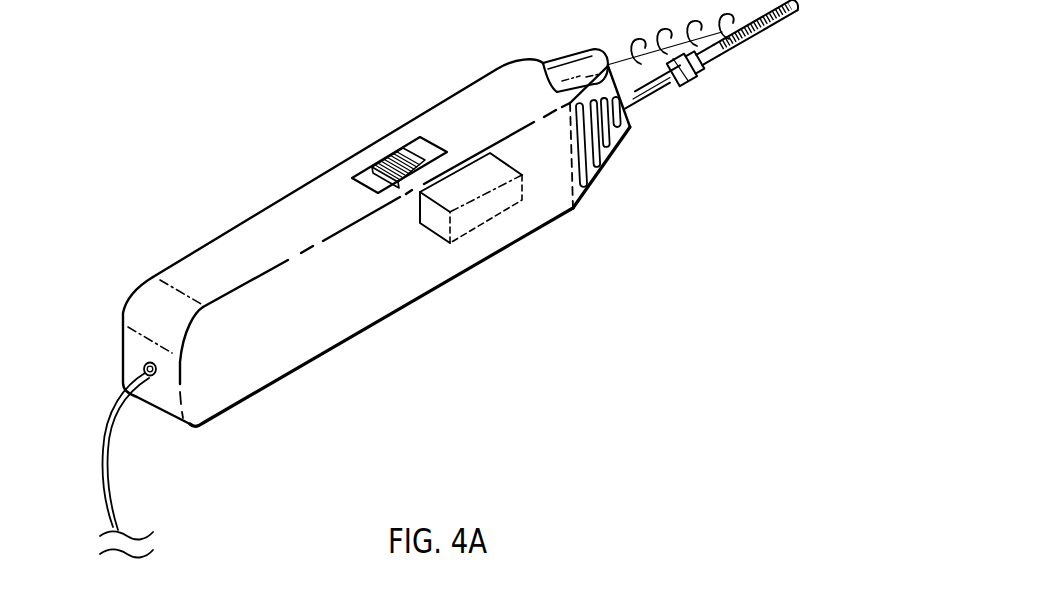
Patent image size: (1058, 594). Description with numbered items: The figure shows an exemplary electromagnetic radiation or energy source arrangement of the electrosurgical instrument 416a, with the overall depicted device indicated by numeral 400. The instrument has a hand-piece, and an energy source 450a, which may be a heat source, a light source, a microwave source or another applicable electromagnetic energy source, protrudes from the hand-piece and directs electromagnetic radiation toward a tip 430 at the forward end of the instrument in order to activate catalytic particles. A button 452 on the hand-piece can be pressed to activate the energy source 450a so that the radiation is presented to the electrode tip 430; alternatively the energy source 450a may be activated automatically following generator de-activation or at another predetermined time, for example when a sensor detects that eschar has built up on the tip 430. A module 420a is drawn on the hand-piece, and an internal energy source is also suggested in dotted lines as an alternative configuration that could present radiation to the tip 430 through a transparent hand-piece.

The handheld device 400 is at (156, 92).
The button 452 is at (417, 145).
The energy source 450a is at (470, 165).
The housing module 420a is at (488, 240).
The tip 430 is at (745, 45).
The electrosurgical instrument 416a is at (742, 227).